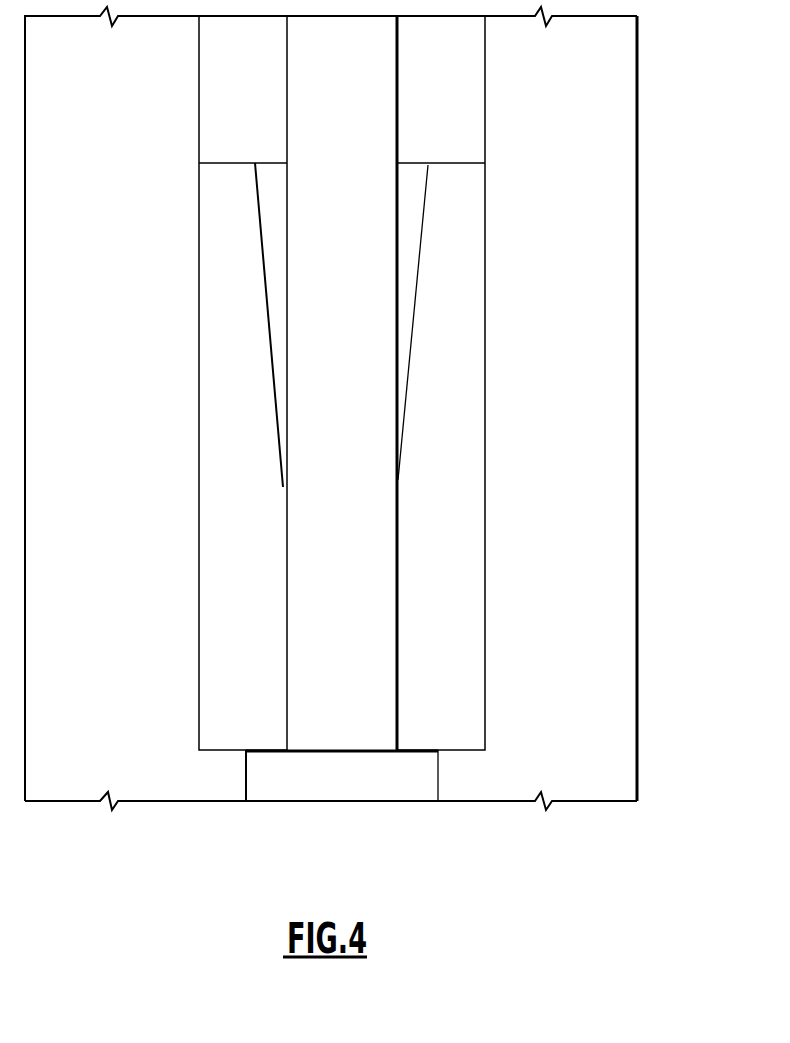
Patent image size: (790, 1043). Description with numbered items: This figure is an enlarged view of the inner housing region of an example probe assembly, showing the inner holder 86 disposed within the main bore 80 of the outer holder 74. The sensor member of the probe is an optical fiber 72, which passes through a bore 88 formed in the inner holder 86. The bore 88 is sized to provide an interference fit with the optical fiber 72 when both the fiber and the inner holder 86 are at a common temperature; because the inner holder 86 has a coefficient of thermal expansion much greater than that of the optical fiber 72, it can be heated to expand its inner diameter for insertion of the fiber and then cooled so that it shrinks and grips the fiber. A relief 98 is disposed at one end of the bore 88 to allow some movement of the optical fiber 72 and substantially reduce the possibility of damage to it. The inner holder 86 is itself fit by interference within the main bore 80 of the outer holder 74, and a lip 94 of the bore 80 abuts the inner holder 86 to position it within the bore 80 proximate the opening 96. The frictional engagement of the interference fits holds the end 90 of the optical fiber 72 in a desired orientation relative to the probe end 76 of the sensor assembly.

The optical fiber 72 is at (357, 124).
The outer holder 74 is at (586, 243).
The probe end 76 is at (231, 801).
The main bore 80 is at (243, 106).
The inner holder 86 is at (452, 383).
The bore 88 is at (397, 512).
The end 90 is at (346, 752).
The lip 94 is at (464, 778).
The opening 96 is at (276, 787).
The relief 98 is at (424, 204).